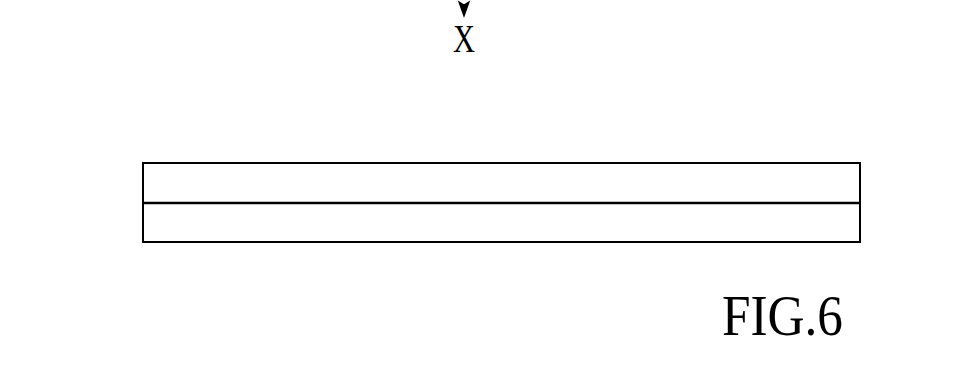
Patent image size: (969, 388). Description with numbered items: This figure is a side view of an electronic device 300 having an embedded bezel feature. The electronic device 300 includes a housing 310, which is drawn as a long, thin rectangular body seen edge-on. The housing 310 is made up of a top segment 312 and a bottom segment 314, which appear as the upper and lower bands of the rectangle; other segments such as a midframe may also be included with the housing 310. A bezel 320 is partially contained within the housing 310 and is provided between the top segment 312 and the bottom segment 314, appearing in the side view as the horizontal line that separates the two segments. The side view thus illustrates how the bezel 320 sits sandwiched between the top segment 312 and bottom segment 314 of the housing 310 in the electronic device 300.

The electronic device 300 is at (449, 195).
The housing 310 is at (449, 206).
The top segment 312 is at (270, 182).
The bottom segment 314 is at (272, 228).
The bezel 320 is at (387, 203).